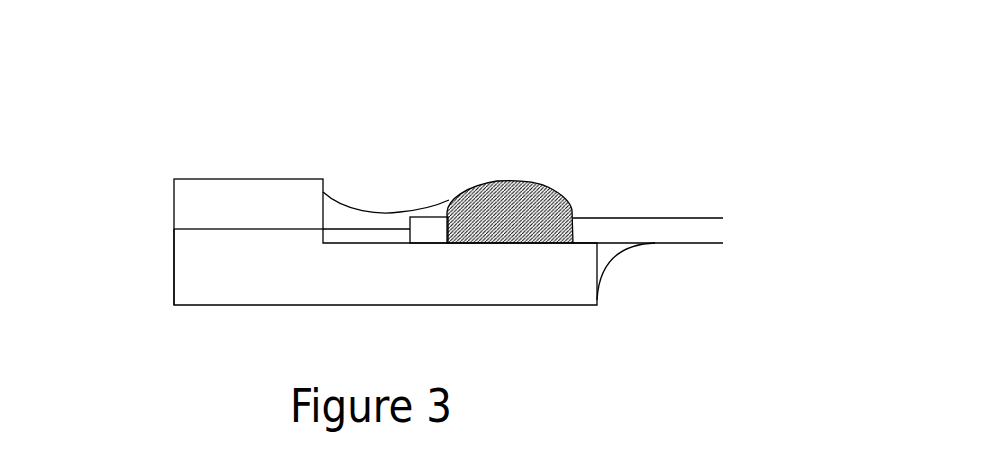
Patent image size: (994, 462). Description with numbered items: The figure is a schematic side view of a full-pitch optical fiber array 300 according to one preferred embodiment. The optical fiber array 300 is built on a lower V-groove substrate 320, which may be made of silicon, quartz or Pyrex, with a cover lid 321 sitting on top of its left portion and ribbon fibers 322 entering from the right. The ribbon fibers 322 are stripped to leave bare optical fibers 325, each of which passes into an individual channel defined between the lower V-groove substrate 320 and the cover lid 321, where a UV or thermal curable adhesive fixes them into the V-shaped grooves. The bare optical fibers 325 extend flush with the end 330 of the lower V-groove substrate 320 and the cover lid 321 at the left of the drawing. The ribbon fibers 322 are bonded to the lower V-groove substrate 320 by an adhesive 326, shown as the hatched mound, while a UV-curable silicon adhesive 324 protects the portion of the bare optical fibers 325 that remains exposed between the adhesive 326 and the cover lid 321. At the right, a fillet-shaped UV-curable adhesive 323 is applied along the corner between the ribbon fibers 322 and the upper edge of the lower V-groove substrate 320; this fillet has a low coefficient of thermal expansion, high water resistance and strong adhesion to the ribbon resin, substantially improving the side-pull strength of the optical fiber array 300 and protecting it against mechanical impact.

The optical fiber array 300 is at (126, 268).
The lower V-groove substrate 320 is at (260, 268).
The cover lid 321 is at (249, 193).
The ribbon fibers 322 is at (622, 218).
The fillet-shaped UV-curable adhesive 323 is at (622, 268).
The UV-curable silicon adhesive 324 is at (400, 205).
The bare optical fibers 325 is at (360, 235).
The adhesive 326 is at (512, 205).
The end 330 is at (162, 257).